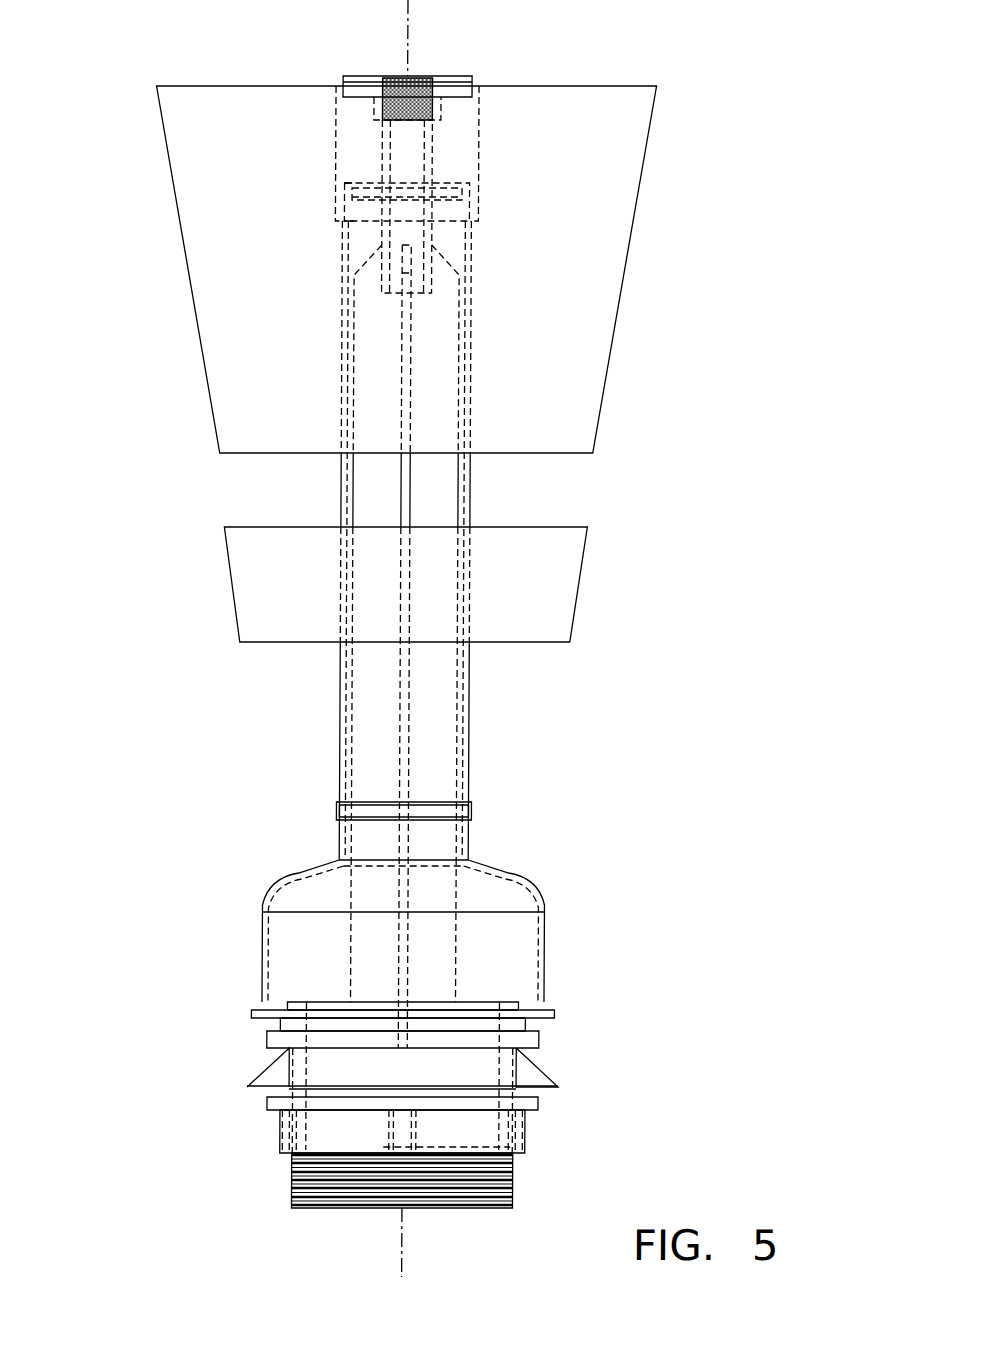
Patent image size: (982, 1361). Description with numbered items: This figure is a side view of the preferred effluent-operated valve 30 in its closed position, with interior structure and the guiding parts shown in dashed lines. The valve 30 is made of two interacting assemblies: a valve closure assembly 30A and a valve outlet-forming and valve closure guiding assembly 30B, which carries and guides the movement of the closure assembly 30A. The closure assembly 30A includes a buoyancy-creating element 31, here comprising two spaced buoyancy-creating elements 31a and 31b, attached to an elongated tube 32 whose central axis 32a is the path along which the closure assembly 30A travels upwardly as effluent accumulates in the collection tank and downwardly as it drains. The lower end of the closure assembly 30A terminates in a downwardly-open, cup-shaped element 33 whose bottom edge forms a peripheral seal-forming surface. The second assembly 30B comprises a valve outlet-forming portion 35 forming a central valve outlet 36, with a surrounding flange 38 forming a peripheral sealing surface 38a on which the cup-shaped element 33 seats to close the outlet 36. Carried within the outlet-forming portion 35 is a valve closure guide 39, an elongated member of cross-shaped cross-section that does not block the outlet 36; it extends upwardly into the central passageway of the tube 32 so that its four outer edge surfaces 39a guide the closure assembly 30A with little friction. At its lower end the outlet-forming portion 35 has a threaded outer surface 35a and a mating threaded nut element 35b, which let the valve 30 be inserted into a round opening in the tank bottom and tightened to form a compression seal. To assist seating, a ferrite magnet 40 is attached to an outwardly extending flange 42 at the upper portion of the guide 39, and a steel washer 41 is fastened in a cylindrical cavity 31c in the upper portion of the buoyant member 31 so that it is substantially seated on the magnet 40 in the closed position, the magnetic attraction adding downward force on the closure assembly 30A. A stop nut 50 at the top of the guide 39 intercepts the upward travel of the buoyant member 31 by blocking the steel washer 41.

The effluent-operated valve 30 is at (622, 836).
The valve closure assembly 30A is at (224, 807).
The valve outlet-forming and valve closure guiding assembly 30B is at (259, 1192).
The buoyancy-creating element 31 is at (608, 645).
The buoyancy-creating element 31a is at (213, 420).
The buoyancy-creating element 31b is at (232, 585).
The cylindrical cavity 31c is at (474, 133).
The elongated tube 32 is at (340, 725).
The central axis 32a is at (405, 38).
The cup-shaped element 33 is at (264, 955).
The valve outlet-forming portion 35 is at (266, 1136).
The threaded outer surface 35a is at (513, 1182).
The threaded nut element 35b is at (530, 1128).
The central valve outlet 36 is at (357, 1233).
The flange 38 is at (557, 1013).
The peripheral sealing surface 38a is at (524, 1002).
The valve closure guide 39 is at (489, 940).
The outer edge surfaces 39a is at (410, 337).
The ferrite magnet 40 is at (316, 198).
The steel washer 41 is at (342, 183).
The outwardly extending flange 42 is at (340, 232).
The stop nut 50 is at (369, 76).